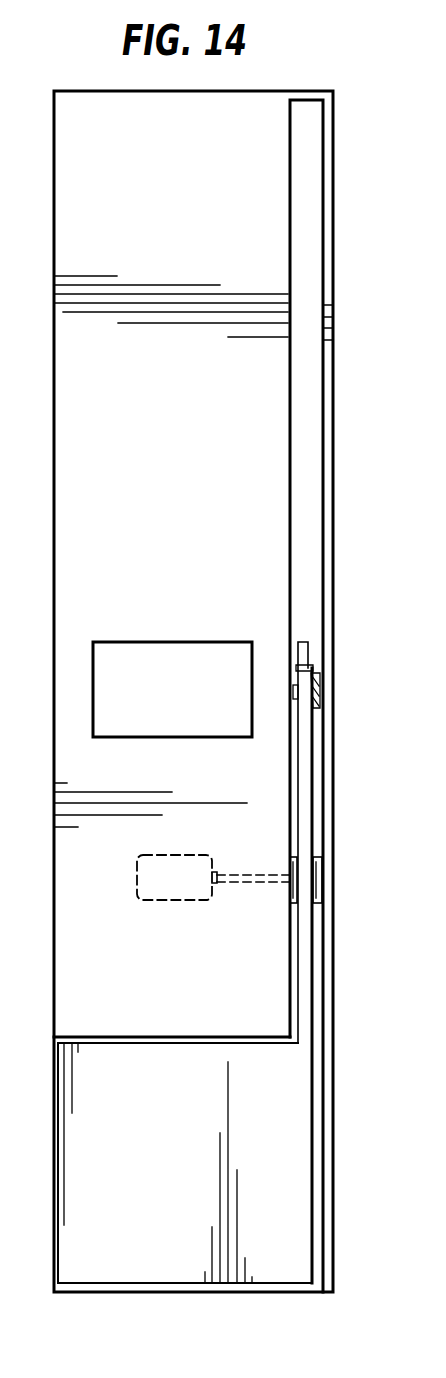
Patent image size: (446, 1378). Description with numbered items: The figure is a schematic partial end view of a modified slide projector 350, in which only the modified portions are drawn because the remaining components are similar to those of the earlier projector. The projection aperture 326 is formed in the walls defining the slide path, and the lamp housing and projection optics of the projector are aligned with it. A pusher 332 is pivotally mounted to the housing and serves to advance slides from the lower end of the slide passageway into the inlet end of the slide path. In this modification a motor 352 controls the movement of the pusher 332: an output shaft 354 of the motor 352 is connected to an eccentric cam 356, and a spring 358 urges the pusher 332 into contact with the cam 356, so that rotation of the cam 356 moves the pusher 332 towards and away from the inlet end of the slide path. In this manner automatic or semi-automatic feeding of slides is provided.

The slide projector 350 is at (324, 85).
The projection aperture 326 is at (185, 699).
The pusher 332 is at (195, 1190).
The motor 352 is at (133, 880).
The output shaft 354 is at (263, 872).
The eccentric cam 356 is at (323, 890).
The spring 358 is at (313, 666).